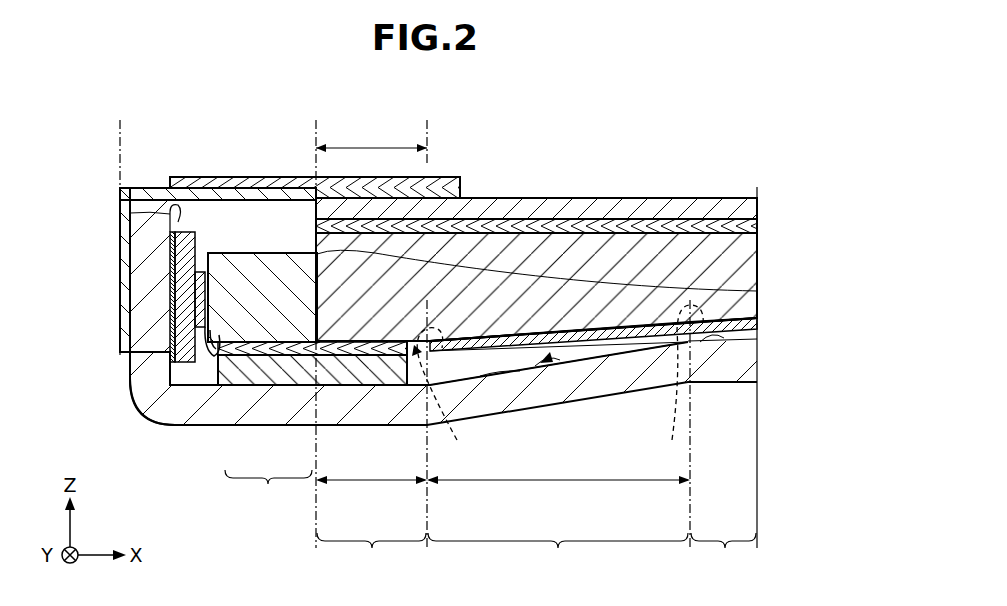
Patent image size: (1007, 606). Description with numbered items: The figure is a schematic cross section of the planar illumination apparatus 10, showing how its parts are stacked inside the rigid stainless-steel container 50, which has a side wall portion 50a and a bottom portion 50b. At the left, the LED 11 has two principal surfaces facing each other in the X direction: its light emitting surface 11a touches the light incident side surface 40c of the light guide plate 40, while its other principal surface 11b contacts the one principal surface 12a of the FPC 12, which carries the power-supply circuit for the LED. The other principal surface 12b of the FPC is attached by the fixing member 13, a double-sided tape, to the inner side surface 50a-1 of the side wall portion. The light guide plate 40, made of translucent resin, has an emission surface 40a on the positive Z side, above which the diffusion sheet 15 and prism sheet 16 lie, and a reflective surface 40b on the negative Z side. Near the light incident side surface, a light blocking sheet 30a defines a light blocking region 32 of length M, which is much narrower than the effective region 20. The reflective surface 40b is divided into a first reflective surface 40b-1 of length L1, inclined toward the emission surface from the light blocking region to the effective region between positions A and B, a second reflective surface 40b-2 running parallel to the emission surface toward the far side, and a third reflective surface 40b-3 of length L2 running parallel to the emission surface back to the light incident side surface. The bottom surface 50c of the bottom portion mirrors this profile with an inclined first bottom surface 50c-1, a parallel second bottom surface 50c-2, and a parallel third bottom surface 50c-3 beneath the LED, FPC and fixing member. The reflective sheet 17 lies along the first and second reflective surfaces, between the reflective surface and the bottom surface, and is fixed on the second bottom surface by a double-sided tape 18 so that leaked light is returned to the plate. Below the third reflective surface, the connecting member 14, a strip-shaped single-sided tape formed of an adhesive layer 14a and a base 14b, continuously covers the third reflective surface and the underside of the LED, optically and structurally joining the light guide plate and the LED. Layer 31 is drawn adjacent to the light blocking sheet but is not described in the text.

The planar illumination apparatus 10 is at (592, 115).
The LED 11 is at (206, 395).
The light emitting surface 11a is at (333, 344).
The principal surface 11b is at (158, 420).
The FPC 12 is at (180, 341).
The principal surface 12a is at (214, 360).
The principal surface 12b is at (173, 258).
The fixing member 13 is at (172, 290).
The connecting member 14 is at (262, 380).
The adhesive layer 14a is at (248, 352).
The base 14b is at (288, 370).
The diffusion sheet 15 is at (745, 226).
The prism sheet 16 is at (742, 205).
The reflective sheet 17 is at (746, 320).
The double-sided tape 18 is at (746, 345).
The effective region 20 is at (550, 185).
The light blocking sheet 30a is at (213, 188).
The cover plate 31 is at (261, 177).
The light blocking region 32 is at (434, 124).
The light guide plate 40 is at (742, 270).
The emission surface 40a is at (640, 198).
The reflective surface 40b is at (740, 325).
The first reflective surface 40b-1 is at (559, 449).
The second reflective surface 40b-2 is at (725, 447).
The third reflective surface 40b-3 is at (373, 459).
The light incident side surface 40c is at (705, 292).
The container 50 is at (740, 367).
The side wall portion 50a is at (150, 314).
The inner side surface 50a-1 is at (172, 216).
The bottom portion 50b is at (624, 378).
The bottom surface 50c is at (577, 372).
The first bottom surface 50c-1 is at (500, 378).
The second bottom surface 50c-2 is at (718, 348).
The third bottom surface 50c-3 is at (372, 378).
The position A is at (439, 398).
The position B is at (684, 387).
The length of light blocking region M is at (388, 135).
The length of first reflective surface L1 is at (558, 492).
The length of third reflective surface L2 is at (371, 492).